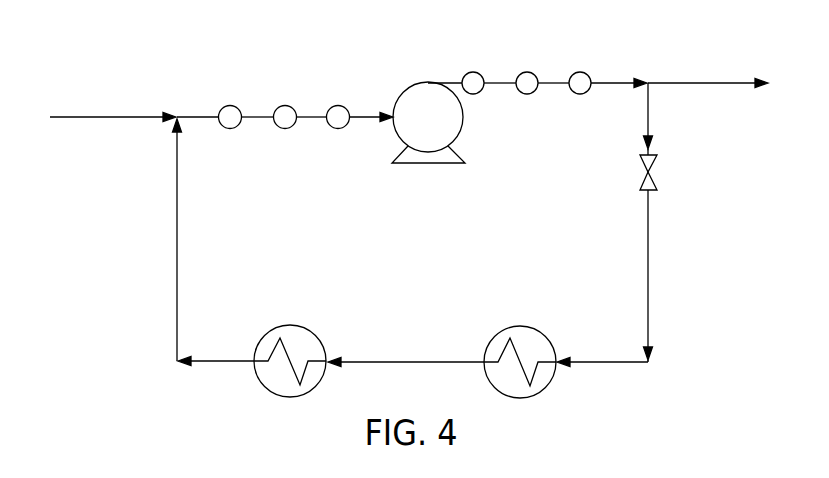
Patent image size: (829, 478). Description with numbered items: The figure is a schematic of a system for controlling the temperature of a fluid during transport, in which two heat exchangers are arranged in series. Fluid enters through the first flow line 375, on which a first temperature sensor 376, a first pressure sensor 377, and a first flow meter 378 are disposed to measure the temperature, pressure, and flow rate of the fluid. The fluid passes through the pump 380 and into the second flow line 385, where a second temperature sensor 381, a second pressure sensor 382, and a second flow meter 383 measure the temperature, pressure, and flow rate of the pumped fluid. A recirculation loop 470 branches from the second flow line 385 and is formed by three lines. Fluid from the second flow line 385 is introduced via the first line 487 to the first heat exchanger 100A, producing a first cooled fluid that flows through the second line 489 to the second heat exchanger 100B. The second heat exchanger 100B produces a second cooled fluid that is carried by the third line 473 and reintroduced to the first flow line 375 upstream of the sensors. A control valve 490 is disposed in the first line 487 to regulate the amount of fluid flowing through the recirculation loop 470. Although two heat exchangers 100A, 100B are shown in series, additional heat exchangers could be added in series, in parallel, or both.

The first flow line 375 is at (95, 115).
The first temperature sensor 376 is at (227, 105).
The first pressure sensor 377 is at (282, 105).
The first flow meter 378 is at (335, 105).
The pump 380 is at (413, 130).
The second temperature sensor 381 is at (468, 70).
The second pressure sensor 382 is at (522, 70).
The second flow meter 383 is at (577, 70).
The second flow line 385 is at (708, 82).
The control valve 490 is at (653, 177).
The first line 487 is at (650, 306).
The first heat exchanger 100A is at (536, 312).
The second line 489 is at (437, 358).
The second heat exchanger 100B is at (310, 310).
The third line 473 is at (210, 358).
The recirculation loop 470 is at (165, 184).